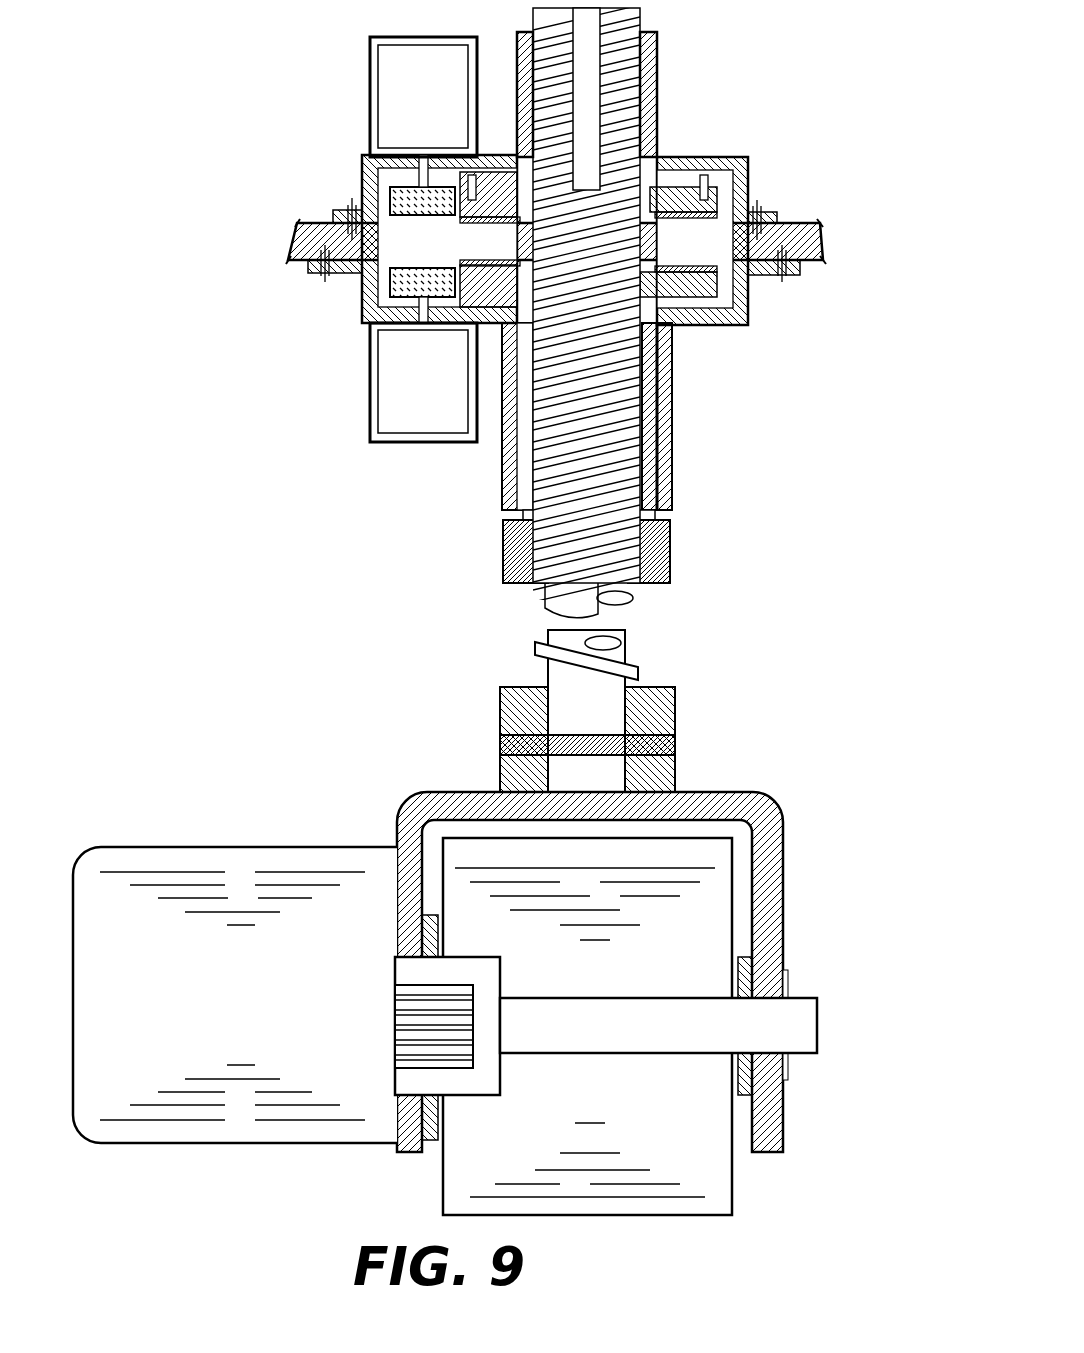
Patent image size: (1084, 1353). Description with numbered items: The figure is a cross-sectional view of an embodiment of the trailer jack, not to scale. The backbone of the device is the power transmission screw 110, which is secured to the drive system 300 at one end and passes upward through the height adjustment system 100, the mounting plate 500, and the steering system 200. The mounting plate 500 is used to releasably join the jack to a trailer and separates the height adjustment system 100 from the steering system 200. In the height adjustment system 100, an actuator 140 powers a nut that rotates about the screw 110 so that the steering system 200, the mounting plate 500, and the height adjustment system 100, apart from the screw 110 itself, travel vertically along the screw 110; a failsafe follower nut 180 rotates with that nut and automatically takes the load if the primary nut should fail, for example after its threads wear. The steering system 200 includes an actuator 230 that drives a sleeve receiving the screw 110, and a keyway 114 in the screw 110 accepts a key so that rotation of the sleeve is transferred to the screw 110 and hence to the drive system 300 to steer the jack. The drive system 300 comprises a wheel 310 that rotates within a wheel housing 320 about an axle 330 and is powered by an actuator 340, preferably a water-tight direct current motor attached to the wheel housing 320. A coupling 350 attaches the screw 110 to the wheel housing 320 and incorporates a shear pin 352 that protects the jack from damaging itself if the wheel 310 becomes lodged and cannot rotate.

The height adjustment system 100 is at (470, 437).
The power transmission screw 110 is at (647, 311).
The keyway 114 is at (592, 110).
The actuator 140 is at (423, 382).
The failsafe follower nut 180 is at (672, 578).
The steering system 200 is at (486, 181).
The actuator 230 is at (423, 97).
The drive system 300 is at (510, 922).
The wheel 310 is at (615, 988).
The wheel housing 320 is at (770, 812).
The axle 330 is at (817, 997).
The actuator 340 is at (250, 1013).
The coupling 350 is at (567, 711).
The shear pin 352 is at (668, 757).
The mounting plate 500 is at (297, 226).